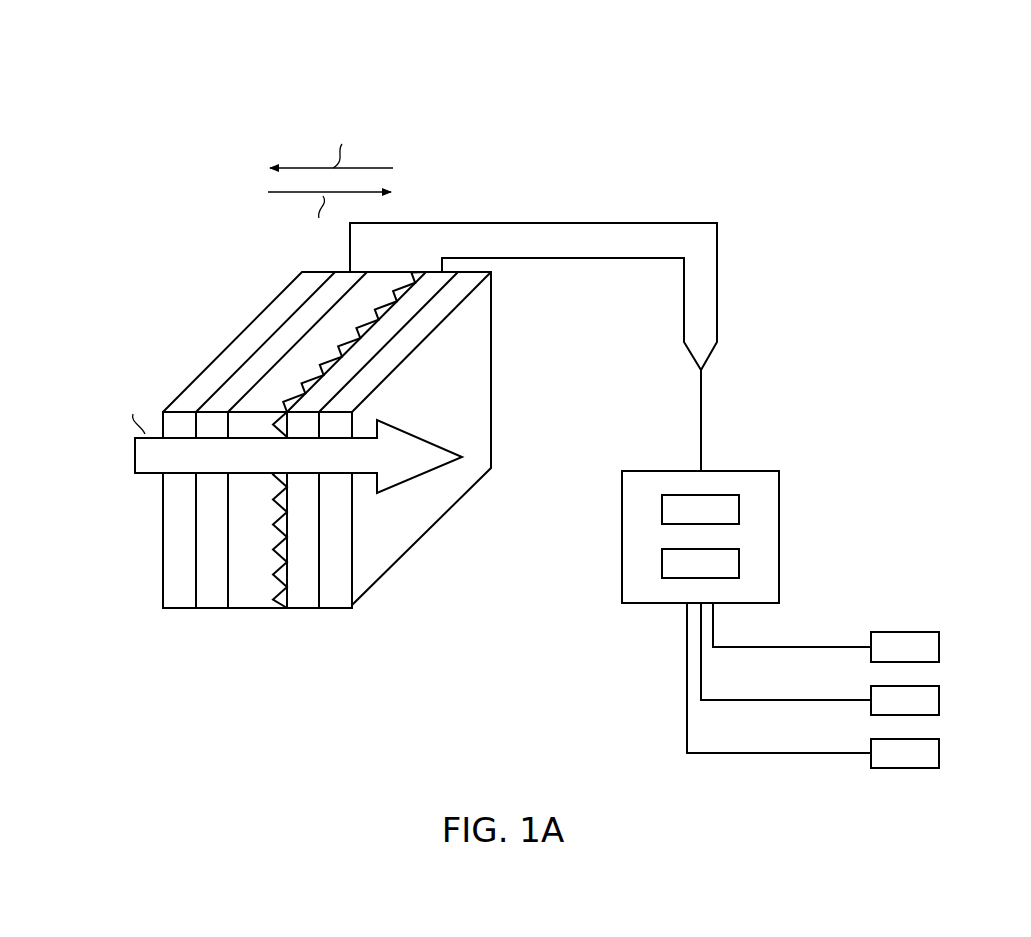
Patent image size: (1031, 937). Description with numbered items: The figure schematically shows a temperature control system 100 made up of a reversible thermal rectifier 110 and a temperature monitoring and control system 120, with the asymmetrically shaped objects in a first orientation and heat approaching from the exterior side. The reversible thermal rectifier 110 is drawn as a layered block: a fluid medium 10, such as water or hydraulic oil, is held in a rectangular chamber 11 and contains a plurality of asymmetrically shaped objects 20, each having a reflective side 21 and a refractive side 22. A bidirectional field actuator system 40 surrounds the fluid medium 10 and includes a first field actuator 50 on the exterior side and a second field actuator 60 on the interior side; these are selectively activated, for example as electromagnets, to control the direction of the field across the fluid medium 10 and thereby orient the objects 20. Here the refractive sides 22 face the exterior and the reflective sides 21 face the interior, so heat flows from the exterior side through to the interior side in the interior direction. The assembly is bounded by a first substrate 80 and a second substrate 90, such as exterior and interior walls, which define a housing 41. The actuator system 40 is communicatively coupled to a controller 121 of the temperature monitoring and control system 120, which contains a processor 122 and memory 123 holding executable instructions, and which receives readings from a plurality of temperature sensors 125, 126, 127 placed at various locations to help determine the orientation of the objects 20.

The temperature control system 100 is at (786, 104).
The reversible thermal rectifier 110 is at (182, 345).
The temperature monitoring and control system 120 is at (881, 445).
The controller 121 is at (782, 540).
The processor 122 is at (700, 509).
The memory 123 is at (700, 563).
The temperature sensor 125 is at (940, 648).
The temperature sensor 126 is at (940, 700).
The temperature sensor 127 is at (940, 753).
The fluid medium 10 is at (250, 562).
The chamber 11 is at (252, 610).
The asymmetrically shaped objects 20 is at (279, 601).
The reflective side 21 is at (333, 368).
The refractive side 22 is at (308, 374).
The bidirectional field actuator system 40 is at (102, 462).
The housing 41 is at (160, 610).
The first field actuator 50 is at (203, 503).
The second field actuator 60 is at (300, 548).
The first substrate 80 is at (180, 603).
The second substrate 90 is at (335, 603).